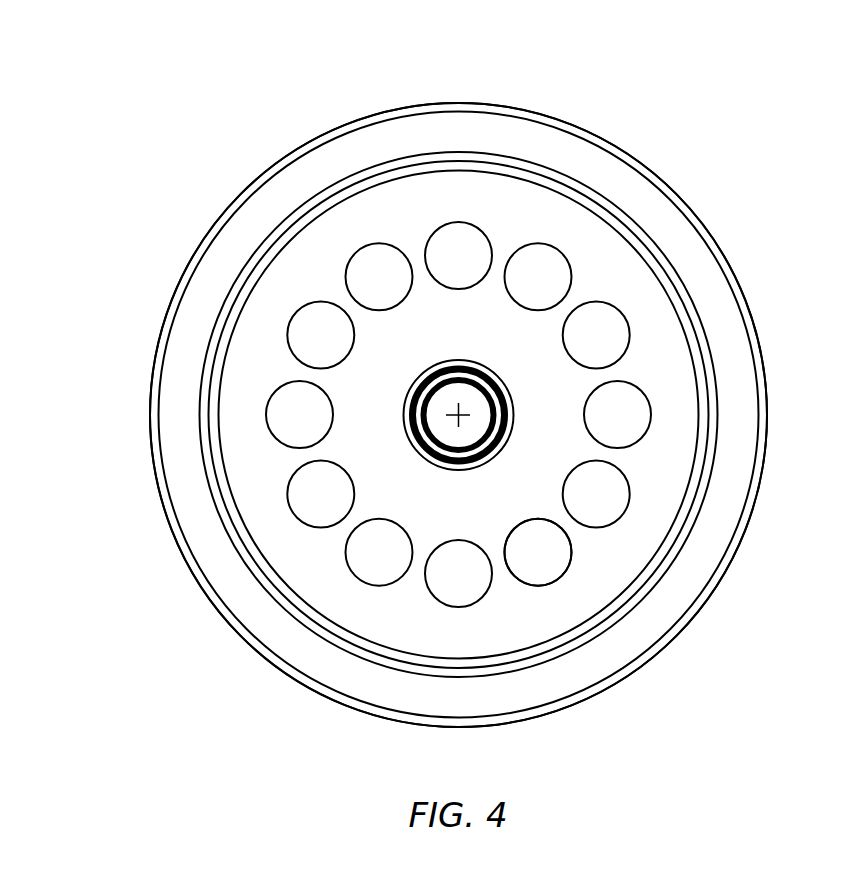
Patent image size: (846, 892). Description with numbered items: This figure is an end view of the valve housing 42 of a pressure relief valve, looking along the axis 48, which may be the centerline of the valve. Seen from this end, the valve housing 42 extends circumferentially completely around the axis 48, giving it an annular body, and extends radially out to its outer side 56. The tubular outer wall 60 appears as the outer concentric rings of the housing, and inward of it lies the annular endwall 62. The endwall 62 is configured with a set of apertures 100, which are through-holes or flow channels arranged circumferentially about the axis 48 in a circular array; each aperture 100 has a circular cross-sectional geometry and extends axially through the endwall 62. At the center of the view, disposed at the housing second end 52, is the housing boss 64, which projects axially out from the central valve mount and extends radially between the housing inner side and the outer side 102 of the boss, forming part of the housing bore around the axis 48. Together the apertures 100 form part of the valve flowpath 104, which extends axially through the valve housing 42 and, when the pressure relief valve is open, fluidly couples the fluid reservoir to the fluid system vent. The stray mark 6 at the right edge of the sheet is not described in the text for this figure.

The valve housing 42 is at (650, 93).
The axis 48 is at (462, 420).
The second end 52 is at (498, 405).
The outer side 56 is at (750, 300).
The outer wall 60 is at (725, 243).
The endwall 62 is at (607, 267).
The housing boss 64 is at (465, 362).
The apertures 100 is at (376, 253).
The outer side 102 is at (425, 458).
The valve flowpath 104 is at (555, 572).
The partial reference 6 is at (838, 587).